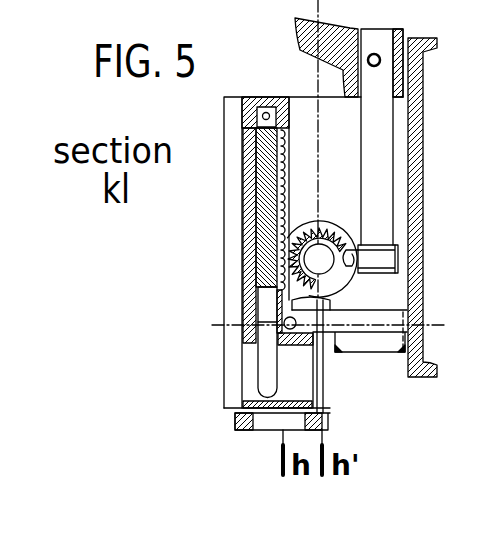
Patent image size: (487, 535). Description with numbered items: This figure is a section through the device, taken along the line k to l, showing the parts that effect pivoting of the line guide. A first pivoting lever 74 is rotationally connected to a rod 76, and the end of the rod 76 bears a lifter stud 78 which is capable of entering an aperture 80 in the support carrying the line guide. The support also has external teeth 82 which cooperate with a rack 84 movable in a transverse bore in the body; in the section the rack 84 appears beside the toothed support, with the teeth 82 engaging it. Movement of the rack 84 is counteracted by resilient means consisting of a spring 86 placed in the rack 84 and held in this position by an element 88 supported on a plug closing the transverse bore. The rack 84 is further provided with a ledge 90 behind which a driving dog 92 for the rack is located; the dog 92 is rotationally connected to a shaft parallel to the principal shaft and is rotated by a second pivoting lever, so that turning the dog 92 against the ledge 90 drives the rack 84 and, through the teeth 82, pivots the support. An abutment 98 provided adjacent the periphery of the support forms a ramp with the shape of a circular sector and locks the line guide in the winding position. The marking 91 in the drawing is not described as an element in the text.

The first pivoting lever 74 is at (323, 24).
The rod 76 is at (382, 140).
The lifter stud 78 is at (352, 232).
The aperture 80 is at (341, 274).
The external teeth 82 is at (312, 218).
The rack 84 is at (282, 170).
The spring 86 is at (249, 222).
The element 88 is at (263, 371).
The ledge 90 is at (302, 347).
The axis line 91 is at (309, 150).
The driving dog 92 is at (262, 322).
The abutment 98 is at (330, 302).